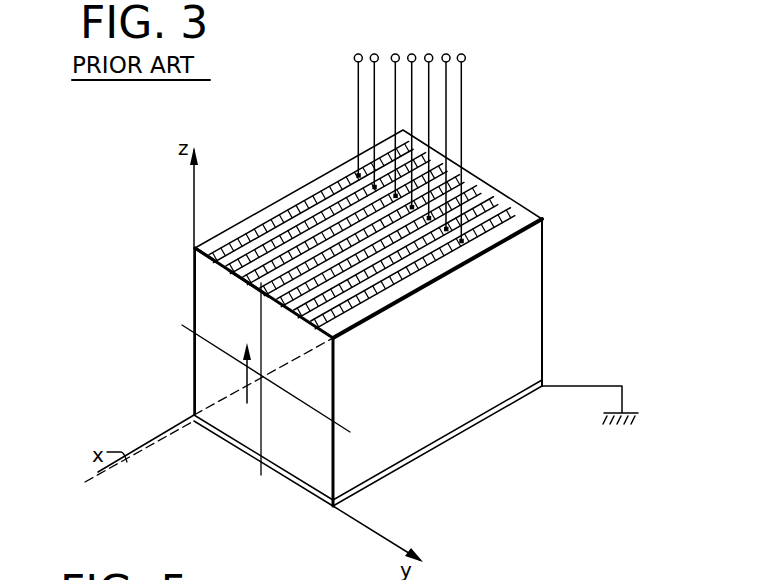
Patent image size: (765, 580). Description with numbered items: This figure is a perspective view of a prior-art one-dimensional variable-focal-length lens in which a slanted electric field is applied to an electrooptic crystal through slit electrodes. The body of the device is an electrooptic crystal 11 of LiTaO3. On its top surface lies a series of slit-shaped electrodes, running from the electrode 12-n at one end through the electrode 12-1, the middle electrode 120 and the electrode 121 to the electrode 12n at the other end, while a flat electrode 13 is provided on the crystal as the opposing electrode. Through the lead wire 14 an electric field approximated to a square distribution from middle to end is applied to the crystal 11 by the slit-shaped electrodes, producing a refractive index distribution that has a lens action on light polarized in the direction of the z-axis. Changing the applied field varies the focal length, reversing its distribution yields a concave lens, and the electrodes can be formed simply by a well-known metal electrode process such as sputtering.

The electrooptic crystal 11 is at (523, 275).
The slit-shaped electrode 12-1 is at (283, 290).
The slit-shaped electrode 12-n is at (312, 326).
The slit-shaped electrode 12n is at (205, 266).
The slit-shaped electrode 121 is at (248, 287).
The slit-shaped electrode 120 is at (262, 300).
The flat electrode 13 is at (465, 430).
The lead wire 14 is at (477, 46).